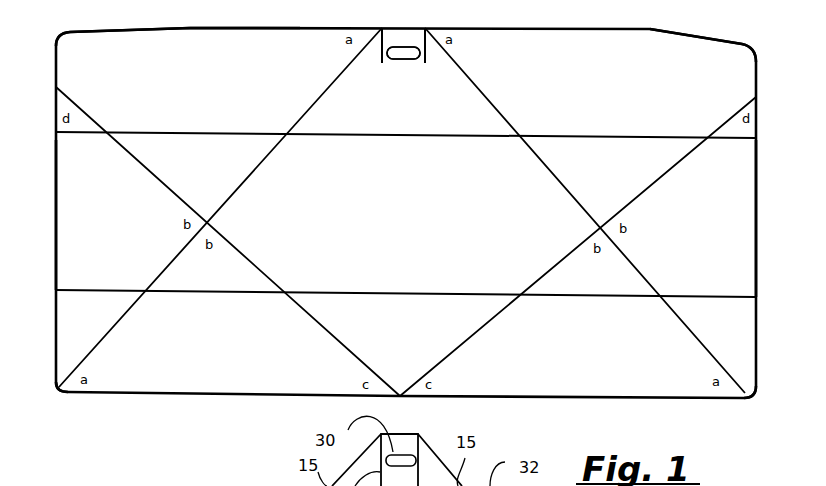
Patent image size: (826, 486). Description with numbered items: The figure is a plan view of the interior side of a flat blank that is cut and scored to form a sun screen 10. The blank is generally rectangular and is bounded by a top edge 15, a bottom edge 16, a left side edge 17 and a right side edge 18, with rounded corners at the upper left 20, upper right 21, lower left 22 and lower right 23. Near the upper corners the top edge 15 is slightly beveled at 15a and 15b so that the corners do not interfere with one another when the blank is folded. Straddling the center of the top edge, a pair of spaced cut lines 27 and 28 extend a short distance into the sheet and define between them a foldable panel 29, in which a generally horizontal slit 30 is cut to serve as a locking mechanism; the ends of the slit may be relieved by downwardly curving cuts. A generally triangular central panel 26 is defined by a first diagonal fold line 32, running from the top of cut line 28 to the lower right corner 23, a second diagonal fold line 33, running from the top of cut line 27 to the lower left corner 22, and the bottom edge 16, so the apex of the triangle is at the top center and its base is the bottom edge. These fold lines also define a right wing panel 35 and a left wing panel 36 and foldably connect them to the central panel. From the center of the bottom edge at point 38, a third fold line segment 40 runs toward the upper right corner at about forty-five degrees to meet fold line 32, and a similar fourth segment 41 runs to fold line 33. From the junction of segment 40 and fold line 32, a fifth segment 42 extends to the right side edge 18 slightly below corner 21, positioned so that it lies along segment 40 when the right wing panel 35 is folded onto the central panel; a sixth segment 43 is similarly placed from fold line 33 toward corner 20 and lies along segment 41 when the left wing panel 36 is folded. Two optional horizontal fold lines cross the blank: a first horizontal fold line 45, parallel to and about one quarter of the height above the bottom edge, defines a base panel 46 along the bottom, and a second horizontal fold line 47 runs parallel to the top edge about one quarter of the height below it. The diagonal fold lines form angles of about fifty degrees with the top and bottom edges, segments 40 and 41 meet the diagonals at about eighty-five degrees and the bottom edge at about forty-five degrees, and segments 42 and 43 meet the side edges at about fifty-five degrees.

The sun screen 10 is at (172, 424).
The top edge 15 is at (190, 27).
The beveled portion of top edge 15a is at (135, 28).
The beveled portion of top edge 15b is at (670, 31).
The bottom edge 16 is at (282, 400).
The left side edge 17 is at (56, 190).
The right side edge 18 is at (756, 222).
The upper left corner 20 is at (50, 33).
The upper right corner 21 is at (761, 44).
The lower left corner 22 is at (49, 396).
The lower right corner 23 is at (760, 406).
The central panel 26 is at (411, 216).
The cut line 27 is at (378, 62).
The cut line 28 is at (430, 62).
The foldable panel 29 is at (412, 33).
The slit 30 is at (386, 46).
The first diagonal fold line 32 is at (497, 100).
The second diagonal fold line 33 is at (298, 96).
The right wing panel 35 is at (696, 221).
The left wing panel 36 is at (118, 219).
The point 38 is at (408, 400).
The third diagonal fold line segment 40 is at (536, 282).
The fourth fold line segment 41 is at (280, 230).
The fifth fold line segment 42 is at (708, 137).
The sixth fold line segment 43 is at (88, 106).
The first horizontal fold line 45 is at (228, 300).
The base panel 46 is at (586, 364).
The second horizontal fold line 47 is at (191, 132).